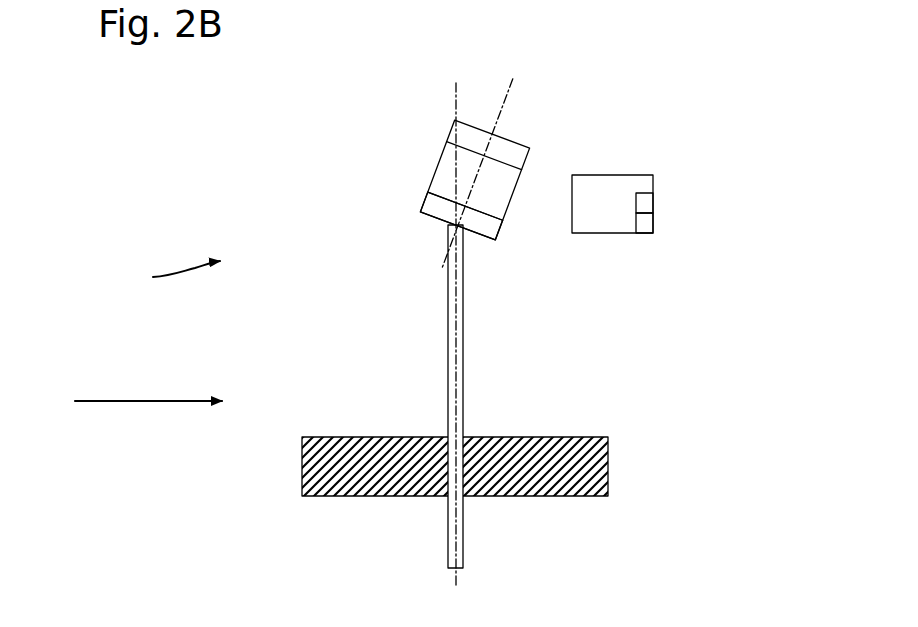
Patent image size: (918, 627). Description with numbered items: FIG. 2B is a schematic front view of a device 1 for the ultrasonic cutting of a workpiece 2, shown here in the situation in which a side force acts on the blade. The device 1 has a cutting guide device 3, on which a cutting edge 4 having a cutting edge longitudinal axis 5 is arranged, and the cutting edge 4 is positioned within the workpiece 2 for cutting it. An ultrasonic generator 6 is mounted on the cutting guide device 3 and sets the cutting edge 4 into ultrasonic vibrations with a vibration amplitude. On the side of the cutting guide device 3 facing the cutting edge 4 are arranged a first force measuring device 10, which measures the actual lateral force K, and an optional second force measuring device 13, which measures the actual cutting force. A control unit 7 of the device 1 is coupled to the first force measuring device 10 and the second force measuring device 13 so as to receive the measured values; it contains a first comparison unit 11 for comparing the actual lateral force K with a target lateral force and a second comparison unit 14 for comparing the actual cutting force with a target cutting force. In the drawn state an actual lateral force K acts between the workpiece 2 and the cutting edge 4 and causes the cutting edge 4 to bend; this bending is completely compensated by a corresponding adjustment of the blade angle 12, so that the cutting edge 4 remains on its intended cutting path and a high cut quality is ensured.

The device 1 is at (171, 278).
The workpiece 2 is at (327, 465).
The cutting guide device 3 is at (430, 182).
The cutting edge 4 is at (448, 355).
The cutting edge longitudinal axis 5 is at (450, 415).
The ultrasonic generator 6 is at (515, 155).
The control unit 7 is at (627, 192).
The first force measuring device 10 is at (427, 213).
The first comparison unit 11 is at (643, 205).
The blade angle 12 is at (458, 103).
The second force measuring device 13 is at (485, 232).
The second comparison unit 14 is at (643, 223).
The actual lateral force K is at (147, 398).